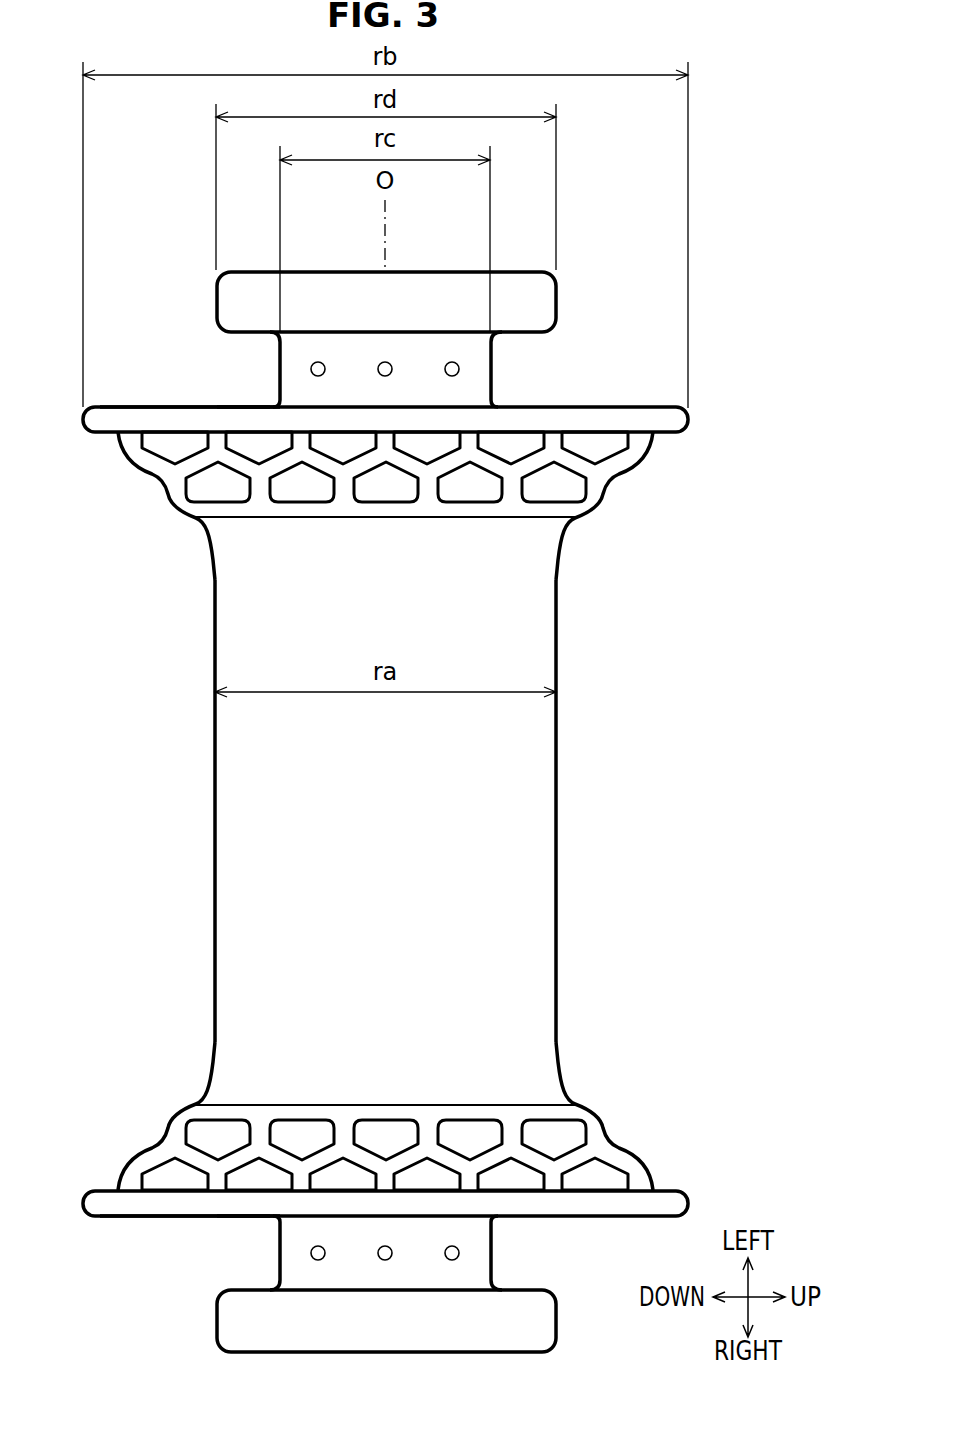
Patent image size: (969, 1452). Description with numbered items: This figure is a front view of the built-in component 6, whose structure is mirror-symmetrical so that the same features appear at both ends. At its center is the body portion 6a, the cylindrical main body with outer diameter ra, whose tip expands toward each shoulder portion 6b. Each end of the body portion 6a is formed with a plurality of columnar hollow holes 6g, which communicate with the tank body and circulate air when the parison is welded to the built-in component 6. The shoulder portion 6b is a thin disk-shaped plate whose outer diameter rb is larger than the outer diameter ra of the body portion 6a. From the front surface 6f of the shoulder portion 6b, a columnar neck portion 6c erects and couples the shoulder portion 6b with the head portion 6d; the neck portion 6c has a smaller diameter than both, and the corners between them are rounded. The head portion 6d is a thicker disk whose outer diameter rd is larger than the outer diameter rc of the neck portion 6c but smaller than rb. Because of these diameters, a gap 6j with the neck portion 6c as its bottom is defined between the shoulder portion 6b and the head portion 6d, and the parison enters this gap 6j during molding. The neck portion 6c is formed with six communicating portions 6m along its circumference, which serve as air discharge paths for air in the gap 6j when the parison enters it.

The built-in component 6 is at (698, 630).
The body portion 6a is at (556, 790).
The shoulder portion 6b is at (688, 418).
The neck portion 6c is at (491, 350).
The head portion 6d is at (556, 297).
The front surface 6f is at (140, 405).
The columnar hollow holes 6g is at (333, 460).
The gap 6j is at (263, 372).
The communicating portions 6m is at (459, 369).